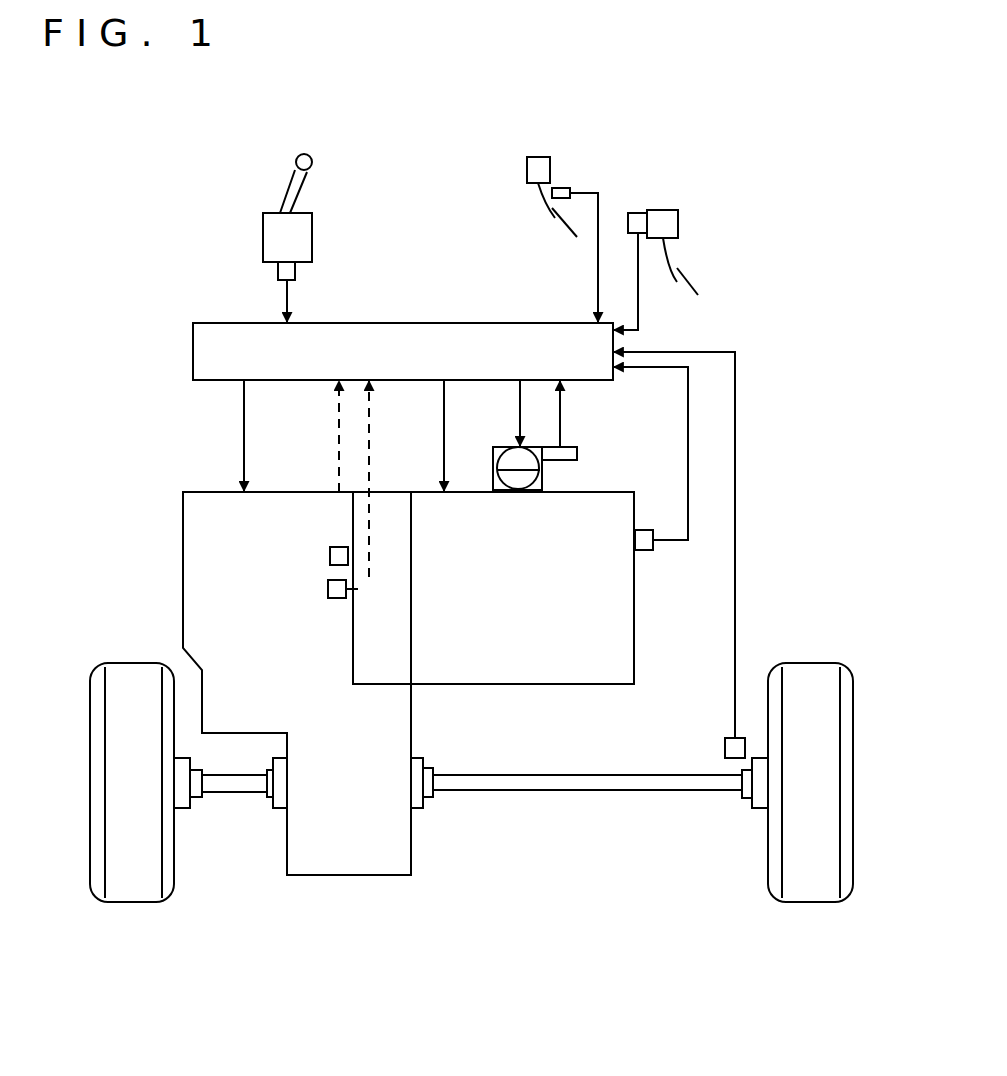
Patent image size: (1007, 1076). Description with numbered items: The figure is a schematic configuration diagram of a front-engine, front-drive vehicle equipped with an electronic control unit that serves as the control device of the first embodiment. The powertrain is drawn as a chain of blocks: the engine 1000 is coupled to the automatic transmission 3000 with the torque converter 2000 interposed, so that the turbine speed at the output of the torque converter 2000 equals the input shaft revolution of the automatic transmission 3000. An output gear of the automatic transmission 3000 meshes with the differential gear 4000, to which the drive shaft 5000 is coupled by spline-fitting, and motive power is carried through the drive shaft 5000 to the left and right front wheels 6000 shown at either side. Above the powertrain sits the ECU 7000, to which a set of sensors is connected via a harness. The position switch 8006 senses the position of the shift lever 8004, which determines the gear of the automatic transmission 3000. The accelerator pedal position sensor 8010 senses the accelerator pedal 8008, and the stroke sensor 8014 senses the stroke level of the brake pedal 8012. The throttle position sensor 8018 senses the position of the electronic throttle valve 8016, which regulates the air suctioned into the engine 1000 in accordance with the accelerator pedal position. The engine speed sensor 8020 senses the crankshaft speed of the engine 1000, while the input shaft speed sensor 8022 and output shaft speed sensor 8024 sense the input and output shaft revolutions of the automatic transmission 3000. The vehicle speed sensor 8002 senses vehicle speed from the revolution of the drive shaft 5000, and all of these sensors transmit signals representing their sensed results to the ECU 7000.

The engine 1000 is at (580, 685).
The torque converter 2000 is at (380, 685).
The automatic transmission 3000 is at (195, 490).
The differential gear 4000 is at (347, 875).
The drive shaft 5000 is at (233, 793).
The front wheel 6000 is at (127, 902).
The ECU 7000 is at (503, 323).
The vehicle speed sensor 8002 is at (725, 746).
The shift lever 8004 is at (308, 177).
The position switch 8006 is at (278, 272).
The accelerator pedal 8008 is at (545, 212).
The accelerator pedal position sensor 8010 is at (566, 188).
The brake pedal 8012 is at (666, 251).
The stroke sensor 8014 is at (638, 213).
The electronic throttle valve 8016 is at (542, 483).
The throttle position sensor 8018 is at (578, 458).
The engine speed sensor 8020 is at (642, 550).
The input shaft speed sensor 8022 is at (333, 546).
The output shaft speed sensor 8024 is at (333, 598).